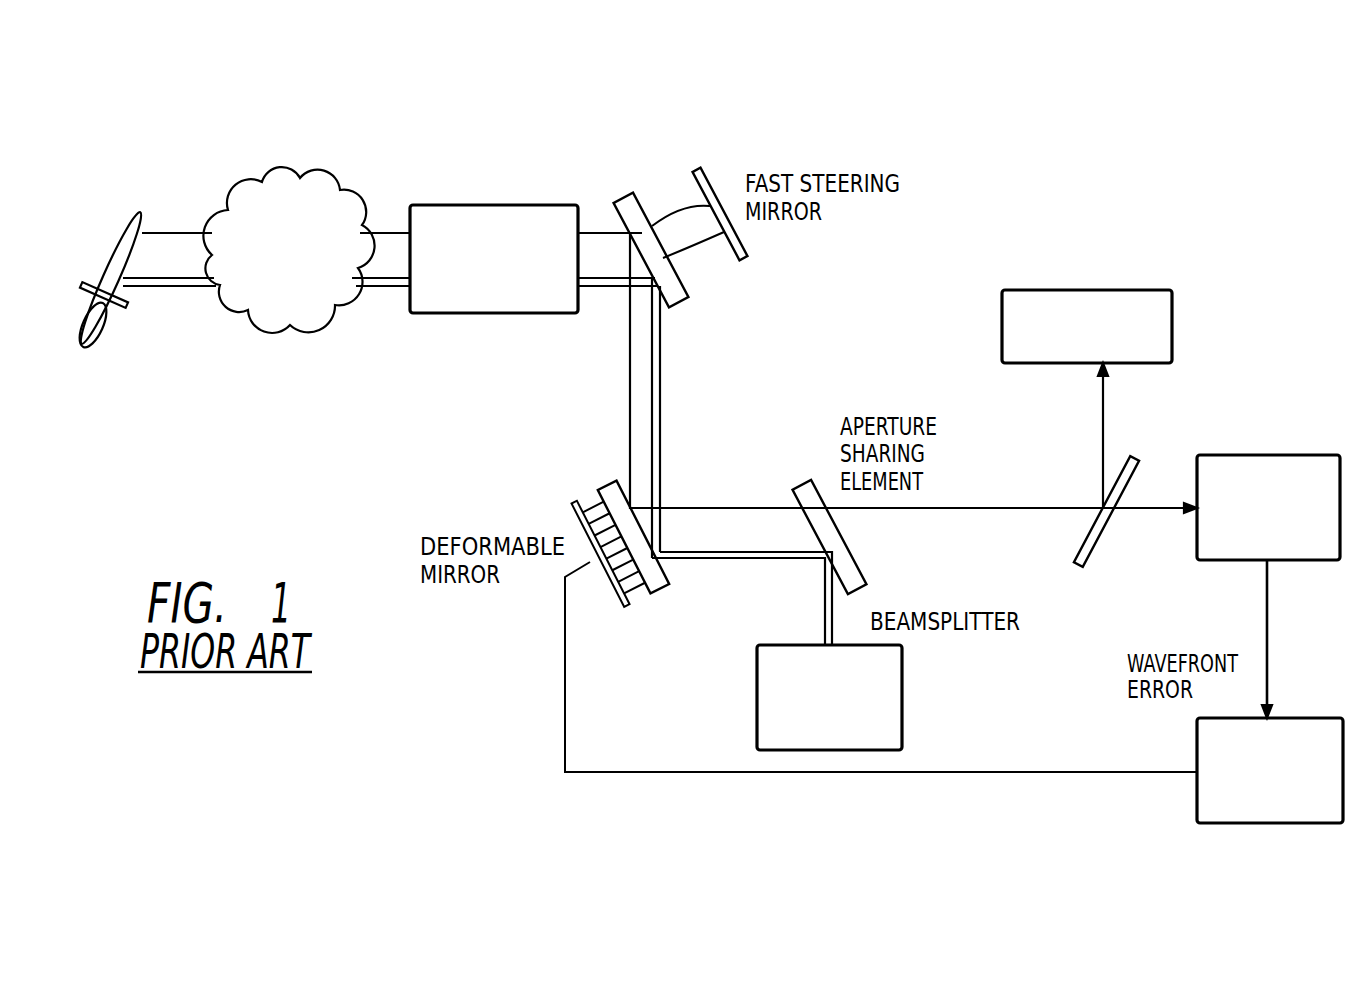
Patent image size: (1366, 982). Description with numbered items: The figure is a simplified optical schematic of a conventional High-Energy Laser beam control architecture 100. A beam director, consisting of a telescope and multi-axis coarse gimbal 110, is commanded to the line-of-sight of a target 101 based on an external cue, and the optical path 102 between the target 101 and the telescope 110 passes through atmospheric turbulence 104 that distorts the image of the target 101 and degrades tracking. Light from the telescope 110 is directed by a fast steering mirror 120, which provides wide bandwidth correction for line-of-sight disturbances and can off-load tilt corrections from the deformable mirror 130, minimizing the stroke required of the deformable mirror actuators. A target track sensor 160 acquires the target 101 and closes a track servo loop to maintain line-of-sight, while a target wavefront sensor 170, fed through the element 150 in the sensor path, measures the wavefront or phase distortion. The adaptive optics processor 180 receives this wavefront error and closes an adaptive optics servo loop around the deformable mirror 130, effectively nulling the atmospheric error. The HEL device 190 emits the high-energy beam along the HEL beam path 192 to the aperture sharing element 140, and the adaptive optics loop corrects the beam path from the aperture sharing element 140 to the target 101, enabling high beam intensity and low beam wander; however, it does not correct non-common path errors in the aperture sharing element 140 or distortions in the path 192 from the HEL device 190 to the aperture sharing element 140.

The HEL beam control architecture 100 is at (210, 113).
The target 101 is at (112, 257).
The optical beam path / line of sight 102 is at (181, 232).
The atmospheric turbulence 104 is at (295, 178).
The telescope and multi-axis coarse gimbal 110 is at (488, 203).
The fast steering mirror 120 is at (626, 197).
The deformable mirror 130 is at (603, 485).
The aperture sharing element 140 is at (865, 566).
The aperture sharing element 150 is at (1097, 545).
The target track sensor 160 is at (1172, 326).
The target wavefront sensor 170 is at (1262, 455).
The adaptive optics processor 180 is at (1302, 718).
The HEL device 190 is at (902, 700).
The HEL beam path 192 is at (720, 560).